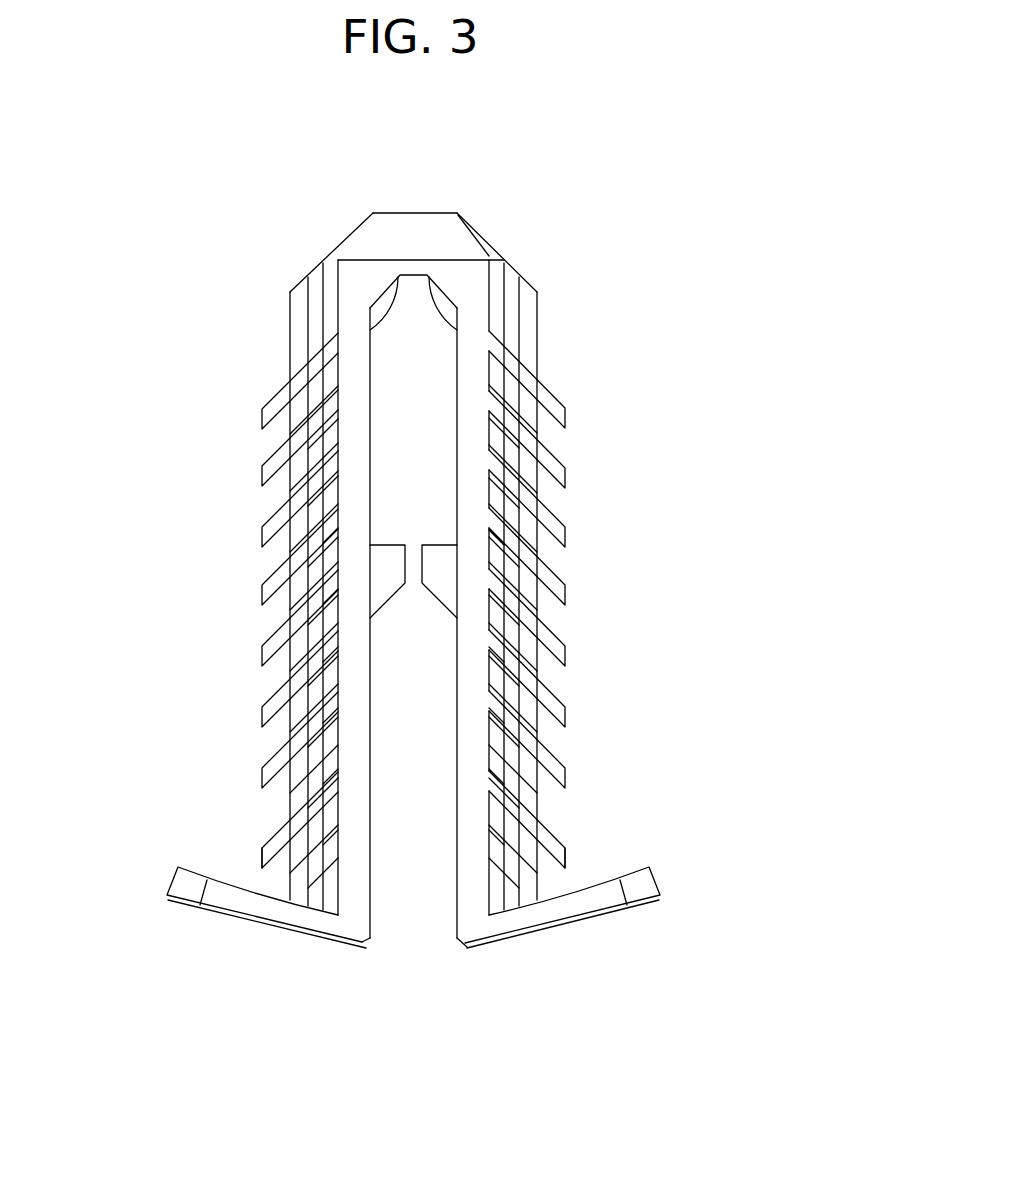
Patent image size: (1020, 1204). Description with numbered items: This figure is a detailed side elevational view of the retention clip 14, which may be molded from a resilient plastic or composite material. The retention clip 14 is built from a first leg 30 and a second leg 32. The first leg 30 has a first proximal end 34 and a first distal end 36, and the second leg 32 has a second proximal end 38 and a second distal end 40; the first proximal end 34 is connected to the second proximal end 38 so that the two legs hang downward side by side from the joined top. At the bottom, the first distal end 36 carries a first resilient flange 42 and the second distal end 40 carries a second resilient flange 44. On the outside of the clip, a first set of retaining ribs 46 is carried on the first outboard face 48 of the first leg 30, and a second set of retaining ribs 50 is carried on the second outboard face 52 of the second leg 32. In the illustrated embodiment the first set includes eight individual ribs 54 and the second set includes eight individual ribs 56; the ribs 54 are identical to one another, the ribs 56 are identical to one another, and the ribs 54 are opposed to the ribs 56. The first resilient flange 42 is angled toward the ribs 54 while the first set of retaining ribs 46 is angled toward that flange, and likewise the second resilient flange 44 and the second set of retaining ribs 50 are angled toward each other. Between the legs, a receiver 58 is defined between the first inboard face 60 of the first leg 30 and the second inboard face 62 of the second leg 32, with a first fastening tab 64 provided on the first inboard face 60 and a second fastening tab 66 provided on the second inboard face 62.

The retention clip 14 is at (625, 185).
The first leg 30 is at (353, 750).
The second leg 32 is at (472, 558).
The first proximal end 34 is at (340, 252).
The first distal end 36 is at (360, 930).
The second proximal end 38 is at (483, 252).
The second distal end 40 is at (472, 928).
The first resilient flange 42 is at (245, 913).
The second resilient flange 44 is at (600, 905).
The first set of retaining ribs 46 is at (177, 617).
The first outboard face 48 is at (340, 497).
The second set of retaining ribs 50 is at (620, 748).
The second outboard face 52 is at (489, 592).
The individual ribs 54 is at (262, 467).
The individual ribs 56 is at (565, 476).
The receiver 58 is at (428, 372).
The first inboard face 60 is at (397, 280).
The second inboard face 62 is at (423, 305).
The first fastening tab 64 is at (382, 588).
The second fastening tab 66 is at (437, 557).